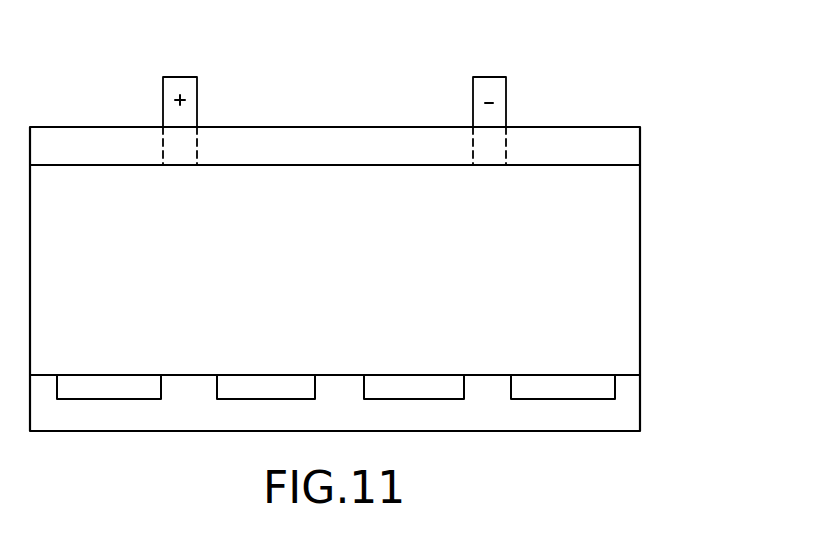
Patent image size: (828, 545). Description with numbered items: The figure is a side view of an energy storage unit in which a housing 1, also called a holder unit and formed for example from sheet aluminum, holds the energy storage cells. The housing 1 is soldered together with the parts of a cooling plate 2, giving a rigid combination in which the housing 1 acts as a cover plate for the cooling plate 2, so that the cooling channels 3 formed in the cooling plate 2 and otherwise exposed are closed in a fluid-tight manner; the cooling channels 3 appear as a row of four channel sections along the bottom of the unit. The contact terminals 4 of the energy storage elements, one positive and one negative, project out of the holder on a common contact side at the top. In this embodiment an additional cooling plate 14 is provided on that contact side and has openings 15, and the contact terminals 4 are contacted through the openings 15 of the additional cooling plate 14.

The housing 1 is at (640, 220).
The cooling plate 2 is at (640, 403).
The cooling channels 3 is at (441, 387).
The contact terminals 4 is at (183, 77).
The additional cooling plate 14 is at (333, 127).
The openings 15 is at (506, 147).